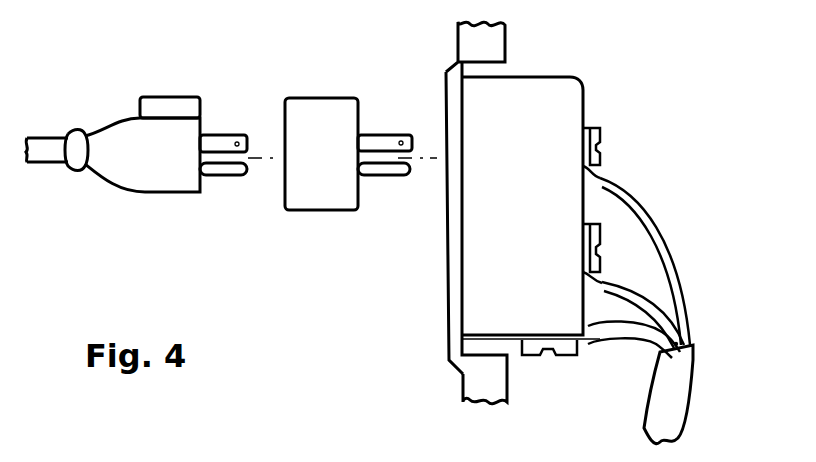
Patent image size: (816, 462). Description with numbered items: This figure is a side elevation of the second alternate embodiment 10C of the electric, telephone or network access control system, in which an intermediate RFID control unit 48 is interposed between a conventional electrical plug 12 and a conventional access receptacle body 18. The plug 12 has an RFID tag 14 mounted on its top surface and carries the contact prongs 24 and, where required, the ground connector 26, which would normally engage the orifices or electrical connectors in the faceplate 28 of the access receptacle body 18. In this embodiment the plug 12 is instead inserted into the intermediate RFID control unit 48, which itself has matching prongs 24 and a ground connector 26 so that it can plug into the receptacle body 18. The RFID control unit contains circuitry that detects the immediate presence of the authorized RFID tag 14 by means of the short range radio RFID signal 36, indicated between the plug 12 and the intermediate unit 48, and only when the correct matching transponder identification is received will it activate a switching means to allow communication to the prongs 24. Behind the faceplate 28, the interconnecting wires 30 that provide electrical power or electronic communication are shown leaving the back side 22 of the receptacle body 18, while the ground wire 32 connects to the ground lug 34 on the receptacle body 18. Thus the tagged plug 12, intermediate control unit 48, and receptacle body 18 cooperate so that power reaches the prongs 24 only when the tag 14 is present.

The second alternate embodiment 10C is at (238, 72).
The electrical plug 12 is at (113, 155).
The RFID tag 14 is at (162, 96).
The access receptacle body 18 is at (531, 208).
The back side 22 is at (586, 101).
The contact prongs 24 is at (248, 153).
The ground connector 26 is at (225, 177).
The faceplate 28 is at (446, 258).
The interconnecting wires 30 is at (658, 214).
The ground wire 32 is at (638, 342).
The ground lug 34 is at (533, 357).
The short range radio RFID signal 36 is at (207, 108).
The intermediate RFID control unit 48 is at (340, 97).